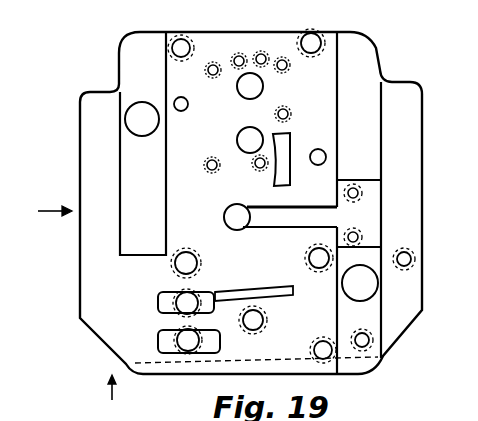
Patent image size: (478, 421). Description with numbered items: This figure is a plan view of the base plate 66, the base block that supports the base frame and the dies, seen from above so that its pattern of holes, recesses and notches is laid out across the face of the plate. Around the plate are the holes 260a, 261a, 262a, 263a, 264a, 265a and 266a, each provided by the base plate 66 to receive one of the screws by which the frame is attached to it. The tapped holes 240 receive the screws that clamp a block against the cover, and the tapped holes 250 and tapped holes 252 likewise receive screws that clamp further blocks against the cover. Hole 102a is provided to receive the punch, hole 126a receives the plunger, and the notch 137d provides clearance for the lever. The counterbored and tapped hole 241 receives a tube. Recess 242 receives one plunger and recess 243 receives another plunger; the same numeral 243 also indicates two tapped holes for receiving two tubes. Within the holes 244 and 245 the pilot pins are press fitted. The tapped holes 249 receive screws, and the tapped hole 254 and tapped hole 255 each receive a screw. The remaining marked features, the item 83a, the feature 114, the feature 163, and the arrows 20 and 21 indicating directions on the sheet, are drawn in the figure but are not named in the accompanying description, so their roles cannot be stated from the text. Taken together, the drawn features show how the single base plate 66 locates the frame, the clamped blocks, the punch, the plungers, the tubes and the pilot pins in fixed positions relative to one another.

The base plate 66 is at (118, 48).
The direction arrow 21 is at (48, 203).
The direction arrow 20 is at (97, 387).
The hole 244 is at (131, 123).
The hole 260a is at (177, 34).
The hole 263a is at (313, 33).
The tapped holes 240 is at (213, 64).
The opening 83a is at (264, 87).
The hole 261a is at (181, 111).
The tapped holes 250 is at (276, 114).
The hole 102a is at (237, 139).
The rib 114 is at (288, 148).
The hole 264a is at (327, 157).
The tapped holes 252 is at (255, 170).
The notch 137d is at (296, 212).
The tapped holes 249 is at (360, 192).
The hole 126a is at (224, 218).
The hole 262a is at (188, 263).
The hole 265a is at (314, 256).
The tapped hole 254 is at (412, 258).
The hole 245 is at (377, 286).
The slot 163 is at (258, 292).
The counterbored and tapped hole 241 is at (259, 318).
The recess 242 is at (162, 300).
The recess 243 is at (177, 311).
The hole 266a is at (313, 350).
The tapped hole 255 is at (370, 328).